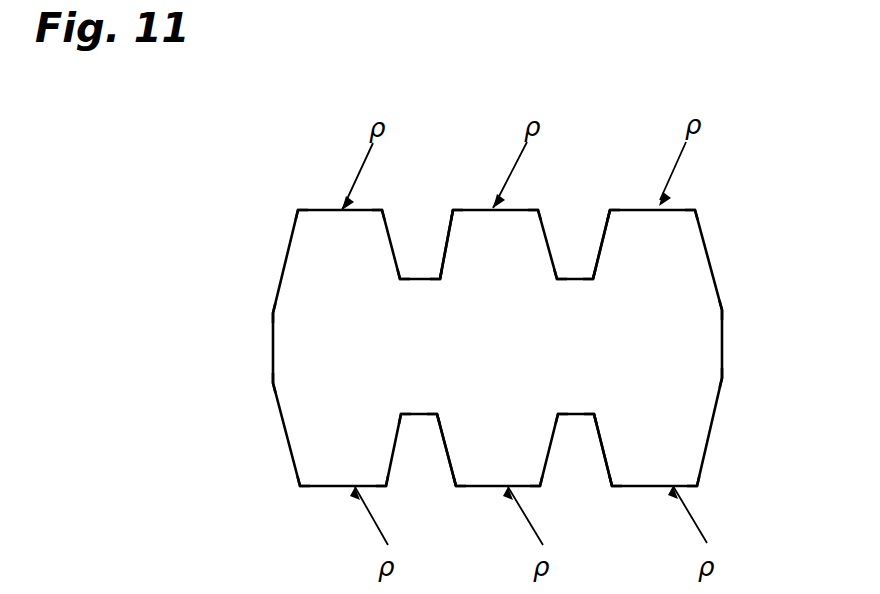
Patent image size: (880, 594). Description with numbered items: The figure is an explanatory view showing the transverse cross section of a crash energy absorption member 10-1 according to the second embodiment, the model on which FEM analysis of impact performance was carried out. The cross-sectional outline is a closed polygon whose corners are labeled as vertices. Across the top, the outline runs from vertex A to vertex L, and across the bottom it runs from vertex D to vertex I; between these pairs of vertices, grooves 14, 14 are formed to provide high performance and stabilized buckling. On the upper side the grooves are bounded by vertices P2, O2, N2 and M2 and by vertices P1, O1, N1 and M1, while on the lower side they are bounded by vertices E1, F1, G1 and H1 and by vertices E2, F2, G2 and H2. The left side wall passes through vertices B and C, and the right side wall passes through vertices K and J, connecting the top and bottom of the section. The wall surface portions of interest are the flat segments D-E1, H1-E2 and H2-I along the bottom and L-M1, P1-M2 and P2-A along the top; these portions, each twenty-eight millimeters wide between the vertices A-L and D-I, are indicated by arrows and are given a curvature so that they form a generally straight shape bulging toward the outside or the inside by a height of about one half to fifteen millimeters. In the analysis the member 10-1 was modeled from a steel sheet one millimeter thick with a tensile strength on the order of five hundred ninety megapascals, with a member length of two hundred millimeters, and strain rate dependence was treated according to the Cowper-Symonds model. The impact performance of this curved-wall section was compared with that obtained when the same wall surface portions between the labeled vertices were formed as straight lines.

The crash energy absorption member 10-1 is at (767, 174).
The groove 14 is at (448, 240).
The vertex A is at (289, 204).
The vertex B is at (259, 318).
The vertex C is at (259, 388).
The vertex D is at (290, 493).
The vertex E1 is at (389, 500).
The vertex E2 is at (544, 500).
The vertex F1 is at (394, 403).
The vertex F2 is at (550, 403).
The vertex G1 is at (445, 403).
The vertex G2 is at (603, 403).
The vertex H1 is at (465, 500).
The vertex H2 is at (617, 500).
The vertex I is at (704, 492).
The vertex J is at (732, 380).
The vertex K is at (735, 313).
The vertex L is at (701, 202).
The vertex M1 is at (625, 198).
The vertex M2 is at (453, 198).
The vertex N1 is at (600, 291).
The vertex N2 is at (444, 293).
The vertex O1 is at (551, 291).
The vertex O2 is at (393, 293).
The vertex P1 is at (544, 198).
The vertex P2 is at (383, 198).